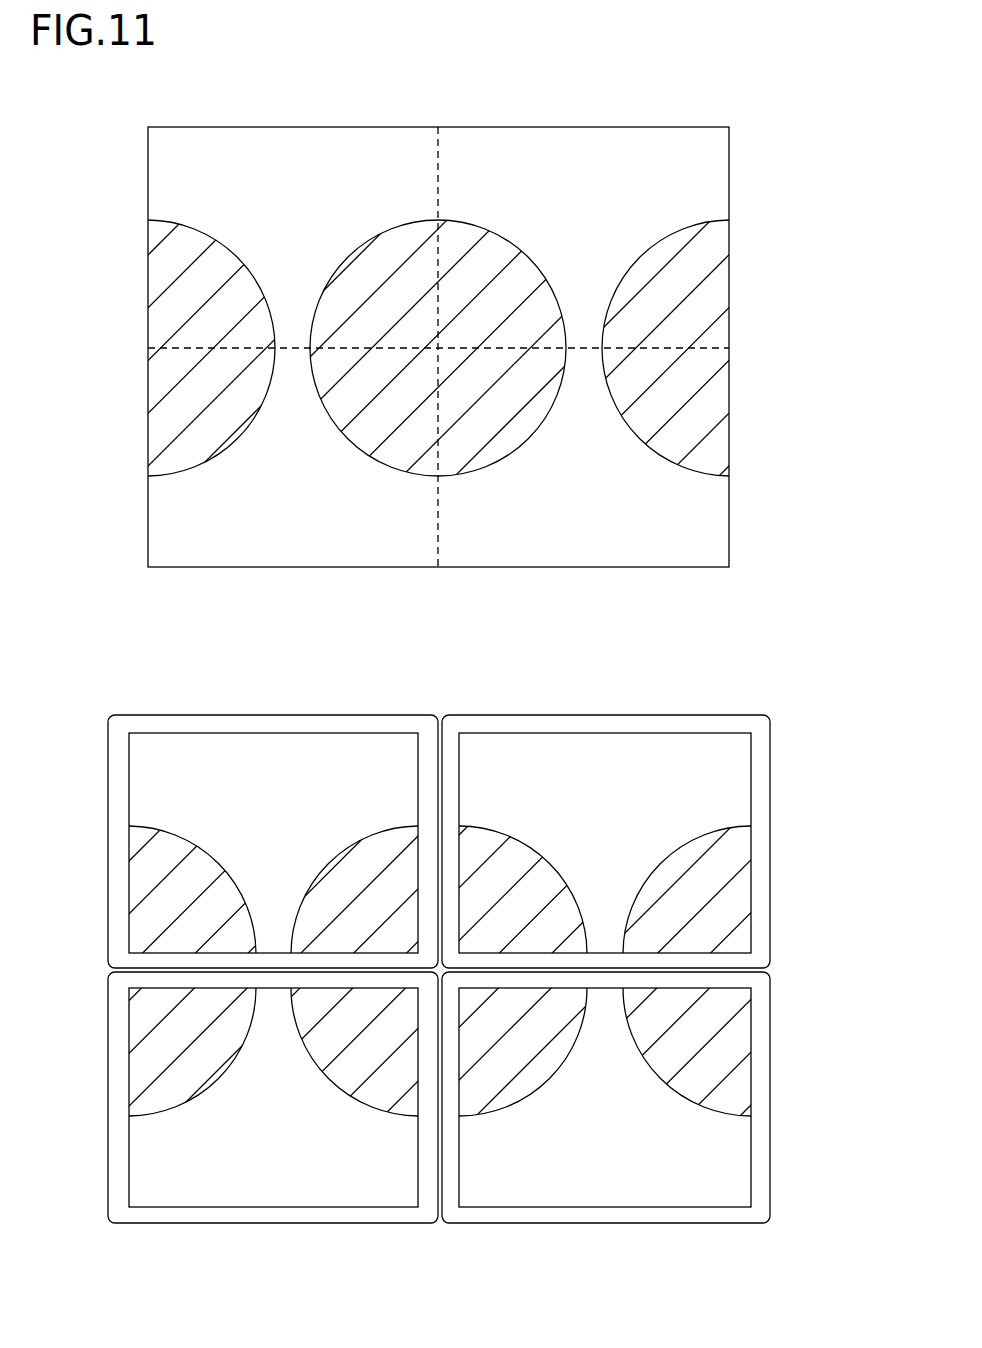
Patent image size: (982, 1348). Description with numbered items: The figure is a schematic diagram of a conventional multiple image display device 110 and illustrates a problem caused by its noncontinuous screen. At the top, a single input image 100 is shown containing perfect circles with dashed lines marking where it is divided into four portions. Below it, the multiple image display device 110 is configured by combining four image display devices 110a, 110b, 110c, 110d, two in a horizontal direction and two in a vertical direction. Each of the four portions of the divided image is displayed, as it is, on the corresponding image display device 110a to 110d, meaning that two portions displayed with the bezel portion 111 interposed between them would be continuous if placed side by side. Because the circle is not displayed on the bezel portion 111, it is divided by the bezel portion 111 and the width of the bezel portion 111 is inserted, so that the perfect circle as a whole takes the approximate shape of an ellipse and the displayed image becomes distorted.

The input image 100 is at (730, 567).
The multiple image display device 110 is at (491, 973).
The image display device 110a is at (282, 713).
The image display device 110b is at (491, 945).
The image display device 110c is at (302, 1223).
The image display device 110d is at (692, 1223).
The bezel portion 111 is at (450, 733).